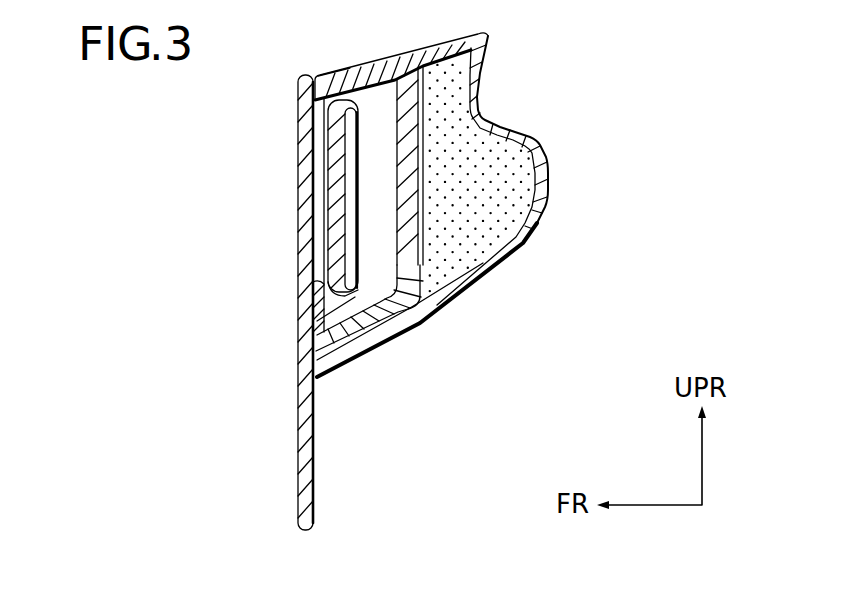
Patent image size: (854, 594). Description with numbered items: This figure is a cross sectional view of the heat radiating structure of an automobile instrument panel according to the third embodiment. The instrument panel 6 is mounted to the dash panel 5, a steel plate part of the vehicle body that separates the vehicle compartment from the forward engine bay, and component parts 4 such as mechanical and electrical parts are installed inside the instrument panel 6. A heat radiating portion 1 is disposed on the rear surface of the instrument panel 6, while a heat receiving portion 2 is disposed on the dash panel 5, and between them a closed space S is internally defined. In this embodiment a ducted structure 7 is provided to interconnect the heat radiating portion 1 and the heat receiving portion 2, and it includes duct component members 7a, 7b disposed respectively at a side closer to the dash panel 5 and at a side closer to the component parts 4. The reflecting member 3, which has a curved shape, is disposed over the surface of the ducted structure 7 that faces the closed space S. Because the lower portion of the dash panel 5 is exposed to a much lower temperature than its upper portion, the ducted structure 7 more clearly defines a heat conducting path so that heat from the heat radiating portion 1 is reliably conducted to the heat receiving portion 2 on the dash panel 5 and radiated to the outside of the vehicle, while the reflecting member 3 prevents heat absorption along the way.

The heat radiating portion 1 is at (375, 68).
The heat receiving portion 2 is at (313, 310).
The reflecting member 3 is at (358, 153).
The component parts 4 is at (513, 203).
The dash panel 5 is at (313, 431).
The instrument panel 6 is at (343, 72).
The ducted structure 7 is at (427, 242).
The duct component member 7a is at (358, 293).
The duct component member 7b is at (413, 285).
The closed space S is at (382, 123).